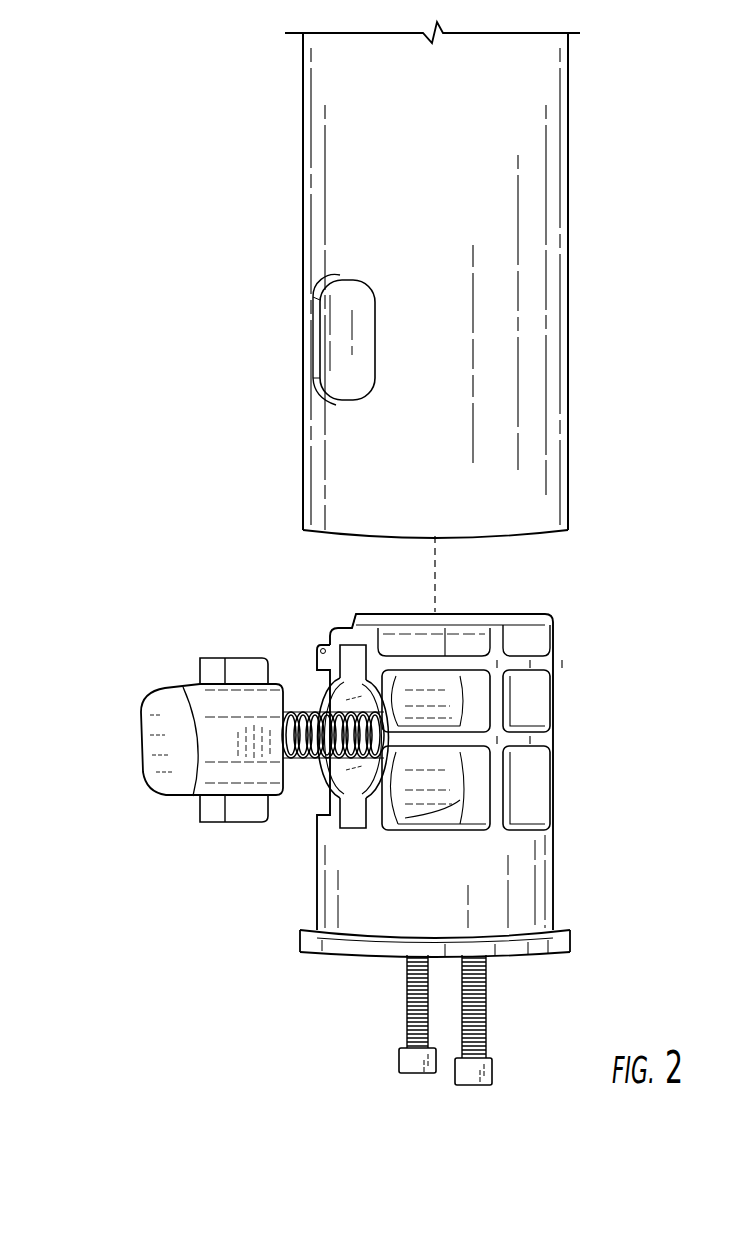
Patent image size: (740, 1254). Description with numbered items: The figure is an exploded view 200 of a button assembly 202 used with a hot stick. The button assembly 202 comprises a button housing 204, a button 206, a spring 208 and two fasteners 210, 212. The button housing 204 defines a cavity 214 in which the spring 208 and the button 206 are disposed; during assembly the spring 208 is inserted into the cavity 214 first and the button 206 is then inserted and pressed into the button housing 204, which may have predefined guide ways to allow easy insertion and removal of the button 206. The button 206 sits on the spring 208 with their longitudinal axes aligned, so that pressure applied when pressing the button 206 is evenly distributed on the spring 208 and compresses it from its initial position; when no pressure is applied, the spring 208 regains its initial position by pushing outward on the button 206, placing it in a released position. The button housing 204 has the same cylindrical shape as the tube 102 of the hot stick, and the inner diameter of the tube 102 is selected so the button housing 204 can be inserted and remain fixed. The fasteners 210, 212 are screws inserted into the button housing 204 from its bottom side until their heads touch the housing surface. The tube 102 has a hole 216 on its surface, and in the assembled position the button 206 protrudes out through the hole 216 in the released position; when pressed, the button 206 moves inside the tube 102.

The exploded view 200 is at (150, 122).
The tube 102 is at (548, 285).
The hole 216 is at (298, 332).
The button assembly 202 is at (95, 660).
The button housing 204 is at (554, 845).
The button 206 is at (140, 758).
The spring 208 is at (308, 794).
The fastener 210 is at (379, 1050).
The fastener 212 is at (468, 1099).
The cavity 214 is at (341, 688).